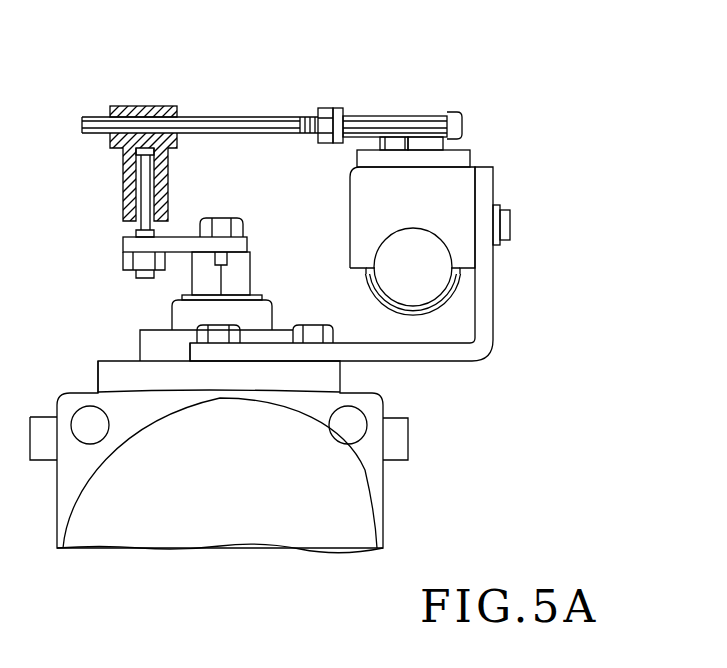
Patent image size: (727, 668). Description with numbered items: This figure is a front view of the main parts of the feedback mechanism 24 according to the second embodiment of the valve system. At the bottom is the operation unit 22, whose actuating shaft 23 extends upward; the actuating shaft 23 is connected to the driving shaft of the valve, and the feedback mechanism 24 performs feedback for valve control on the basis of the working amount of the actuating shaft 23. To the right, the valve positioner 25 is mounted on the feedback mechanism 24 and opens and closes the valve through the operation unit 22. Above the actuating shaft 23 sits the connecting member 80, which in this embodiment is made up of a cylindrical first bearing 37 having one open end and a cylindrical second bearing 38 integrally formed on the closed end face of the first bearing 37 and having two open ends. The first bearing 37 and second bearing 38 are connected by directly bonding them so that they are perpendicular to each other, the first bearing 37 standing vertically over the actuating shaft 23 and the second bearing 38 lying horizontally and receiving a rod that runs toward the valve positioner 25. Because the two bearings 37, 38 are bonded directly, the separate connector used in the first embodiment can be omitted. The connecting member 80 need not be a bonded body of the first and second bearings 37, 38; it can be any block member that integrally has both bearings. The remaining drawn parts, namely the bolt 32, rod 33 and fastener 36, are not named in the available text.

The operation unit 22 is at (236, 491).
The actuating shaft 23 is at (252, 270).
The feedback mechanism 24 is at (367, 51).
The valve positioner 25 is at (426, 201).
The bolt 32 is at (136, 178).
The rod 33 is at (250, 116).
The bolt 36 is at (418, 136).
The first bearing 37 is at (123, 195).
The second bearing 38 is at (153, 106).
The connecting member 80 is at (104, 102).